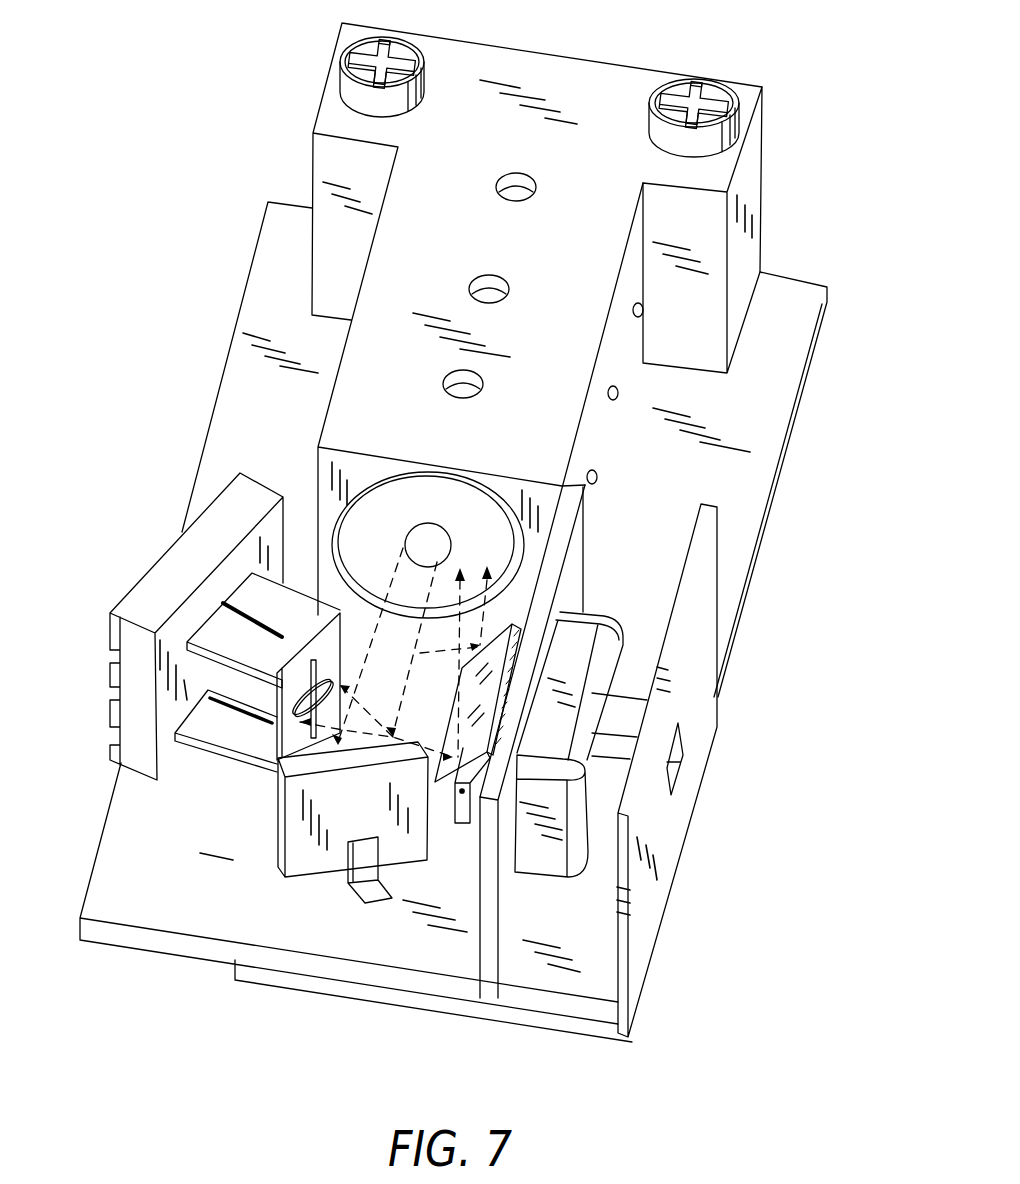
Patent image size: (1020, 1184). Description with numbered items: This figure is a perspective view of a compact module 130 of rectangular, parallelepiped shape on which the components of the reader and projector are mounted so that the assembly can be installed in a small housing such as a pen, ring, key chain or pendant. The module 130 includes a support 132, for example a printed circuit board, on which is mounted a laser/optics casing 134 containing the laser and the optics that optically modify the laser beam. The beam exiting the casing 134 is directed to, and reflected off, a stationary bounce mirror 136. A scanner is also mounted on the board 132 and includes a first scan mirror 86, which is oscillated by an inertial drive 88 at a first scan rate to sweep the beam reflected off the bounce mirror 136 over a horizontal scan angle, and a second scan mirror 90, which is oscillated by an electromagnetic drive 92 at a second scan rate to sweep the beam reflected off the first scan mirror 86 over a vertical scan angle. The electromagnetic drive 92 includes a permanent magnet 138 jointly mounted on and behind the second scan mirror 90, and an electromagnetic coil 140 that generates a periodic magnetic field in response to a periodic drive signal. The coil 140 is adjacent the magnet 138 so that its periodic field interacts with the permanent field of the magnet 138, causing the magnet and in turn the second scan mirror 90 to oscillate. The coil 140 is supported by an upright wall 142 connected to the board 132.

The first scan mirror 86 is at (302, 712).
The inertial drive 88 is at (156, 604).
The second scan mirror 90 is at (453, 790).
The electromagnetic drive 92 is at (575, 877).
The module 130 is at (714, 68).
The support 132 is at (803, 290).
The laser/optics casing 134 is at (573, 64).
The stationary bounce mirror 136 is at (297, 868).
The permanent magnet 138 is at (488, 850).
The electromagnetic coil 140 is at (545, 868).
The upright wall 142 is at (657, 917).